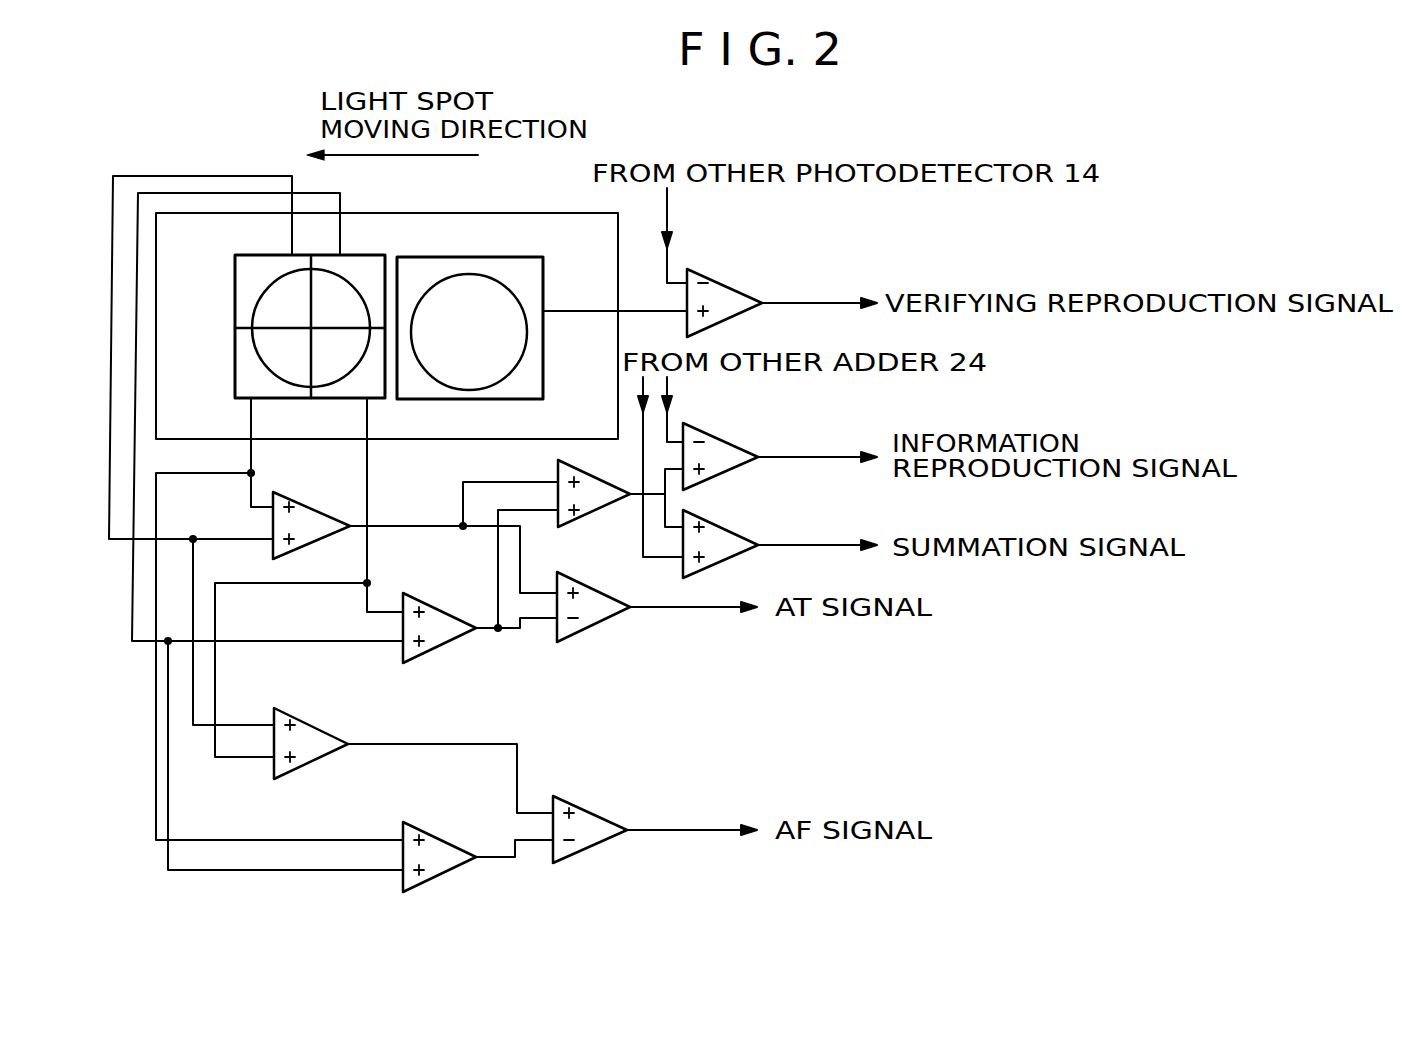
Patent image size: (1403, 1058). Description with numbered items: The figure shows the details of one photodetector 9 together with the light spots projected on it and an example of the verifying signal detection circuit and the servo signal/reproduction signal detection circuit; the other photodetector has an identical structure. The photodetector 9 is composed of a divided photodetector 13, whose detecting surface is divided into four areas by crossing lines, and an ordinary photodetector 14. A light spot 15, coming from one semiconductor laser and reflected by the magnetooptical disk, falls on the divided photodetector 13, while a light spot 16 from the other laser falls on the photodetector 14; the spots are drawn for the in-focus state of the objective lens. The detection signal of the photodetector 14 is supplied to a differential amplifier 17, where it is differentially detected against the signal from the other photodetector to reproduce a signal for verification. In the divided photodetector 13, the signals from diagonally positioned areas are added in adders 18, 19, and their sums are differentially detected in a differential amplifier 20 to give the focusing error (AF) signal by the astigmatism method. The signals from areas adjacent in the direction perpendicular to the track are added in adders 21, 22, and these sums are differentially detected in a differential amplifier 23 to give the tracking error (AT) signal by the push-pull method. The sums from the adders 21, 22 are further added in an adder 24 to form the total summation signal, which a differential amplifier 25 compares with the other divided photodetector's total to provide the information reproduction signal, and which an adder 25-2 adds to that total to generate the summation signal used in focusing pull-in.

The photodetector 9 is at (485, 213).
The divided photodetector 13 is at (245, 255).
The photodetector 14 is at (466, 257).
The light spot 15 is at (310, 326).
The light spot 16 is at (469, 332).
The differential amplifier 17 is at (718, 283).
The adder 18 is at (310, 715).
The adder 19 is at (447, 833).
The differential amplifier 20 is at (594, 809).
The adder 21 is at (296, 499).
The adder 22 is at (450, 650).
The differential amplifier 23 is at (600, 629).
The adder 24 is at (603, 511).
The differential amplifier 25 is at (712, 433).
The adder 25-2 is at (710, 524).